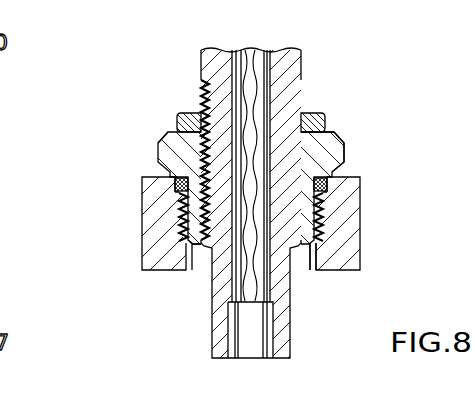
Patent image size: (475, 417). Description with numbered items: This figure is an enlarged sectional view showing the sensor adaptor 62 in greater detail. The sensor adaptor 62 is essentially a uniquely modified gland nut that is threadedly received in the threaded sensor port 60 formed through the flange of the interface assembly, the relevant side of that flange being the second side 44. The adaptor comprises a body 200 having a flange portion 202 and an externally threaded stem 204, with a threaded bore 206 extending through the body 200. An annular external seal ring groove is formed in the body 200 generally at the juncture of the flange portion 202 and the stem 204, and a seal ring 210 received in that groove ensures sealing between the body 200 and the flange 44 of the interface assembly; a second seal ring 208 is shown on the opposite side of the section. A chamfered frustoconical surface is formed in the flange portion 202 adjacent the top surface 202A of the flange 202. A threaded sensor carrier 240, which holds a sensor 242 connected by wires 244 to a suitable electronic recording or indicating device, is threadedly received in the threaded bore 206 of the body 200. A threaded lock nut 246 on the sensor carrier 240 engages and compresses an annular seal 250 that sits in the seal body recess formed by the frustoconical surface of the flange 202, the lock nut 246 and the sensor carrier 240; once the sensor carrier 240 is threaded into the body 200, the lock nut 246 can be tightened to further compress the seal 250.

The second side 44 is at (157, 233).
The threaded sensor port 60 is at (317, 262).
The sensor adaptor 62 is at (374, 137).
The body 200 is at (327, 170).
The flange portion 202 is at (333, 148).
The top surface 202A is at (330, 133).
The externally threaded stem 204 is at (198, 243).
The threaded bore 206 is at (158, 143).
The O-ring seal 208 is at (322, 220).
The seal ring 210 is at (175, 180).
The threaded sensor carrier 240 is at (292, 62).
The sensor 242 is at (245, 348).
The wires 244 is at (255, 55).
The threaded lock nut 246 is at (181, 113).
The annular seal 250 is at (322, 113).